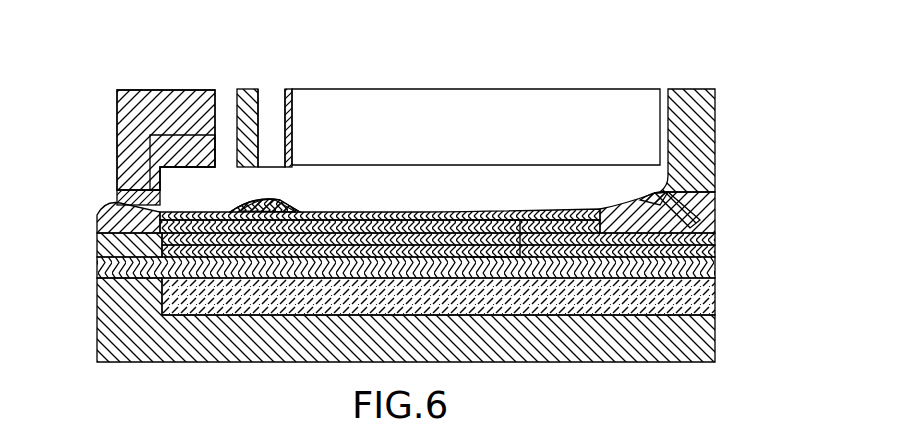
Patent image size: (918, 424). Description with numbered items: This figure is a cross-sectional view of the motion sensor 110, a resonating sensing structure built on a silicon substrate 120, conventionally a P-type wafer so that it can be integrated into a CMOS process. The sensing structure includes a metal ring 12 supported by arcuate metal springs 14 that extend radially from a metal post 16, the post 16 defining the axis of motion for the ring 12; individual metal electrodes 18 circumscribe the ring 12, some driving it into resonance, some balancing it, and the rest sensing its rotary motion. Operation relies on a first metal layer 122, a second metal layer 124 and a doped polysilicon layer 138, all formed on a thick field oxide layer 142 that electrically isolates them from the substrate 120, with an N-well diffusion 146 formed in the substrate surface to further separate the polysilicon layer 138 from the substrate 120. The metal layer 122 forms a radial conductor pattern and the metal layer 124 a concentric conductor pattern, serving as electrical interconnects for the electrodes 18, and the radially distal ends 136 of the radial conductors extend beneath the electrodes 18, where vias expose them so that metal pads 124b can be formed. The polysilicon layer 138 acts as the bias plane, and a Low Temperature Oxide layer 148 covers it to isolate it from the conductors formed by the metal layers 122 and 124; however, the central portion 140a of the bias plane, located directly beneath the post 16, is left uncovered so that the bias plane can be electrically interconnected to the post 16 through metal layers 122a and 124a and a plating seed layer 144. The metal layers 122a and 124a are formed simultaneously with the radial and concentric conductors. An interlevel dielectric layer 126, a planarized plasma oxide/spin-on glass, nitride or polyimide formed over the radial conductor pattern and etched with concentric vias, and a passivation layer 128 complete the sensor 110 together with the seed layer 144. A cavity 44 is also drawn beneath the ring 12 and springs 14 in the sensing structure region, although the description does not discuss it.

The motion sensor 110 is at (670, 53).
The silicon substrate 120 is at (672, 352).
The N-well diffusion 146 is at (713, 298).
The field oxide layer 142 is at (713, 270).
The central portion of the bias plane 140a is at (713, 252).
The metal layer 122a is at (713, 229).
The metal layer 124a is at (713, 213).
The first metal layer 122 is at (293, 212).
The Low Temperature Oxide layer 148 is at (348, 227).
The doped polysilicon layer 138 is at (492, 247).
The radially distal ends of the radial conductors 136 is at (105, 247).
The passivation layer 128 is at (178, 203).
The interlevel dielectric layer 126 is at (103, 227).
The second metal layer 124 is at (243, 210).
The metal pads 124b is at (166, 140).
The plating seed layer 144 is at (118, 167).
The metal electrodes 18 is at (117, 90).
The metal ring 12 is at (245, 92).
The arcuate metal springs 14 is at (290, 112).
The cavity 44 is at (454, 84).
The metal post 16 is at (698, 100).